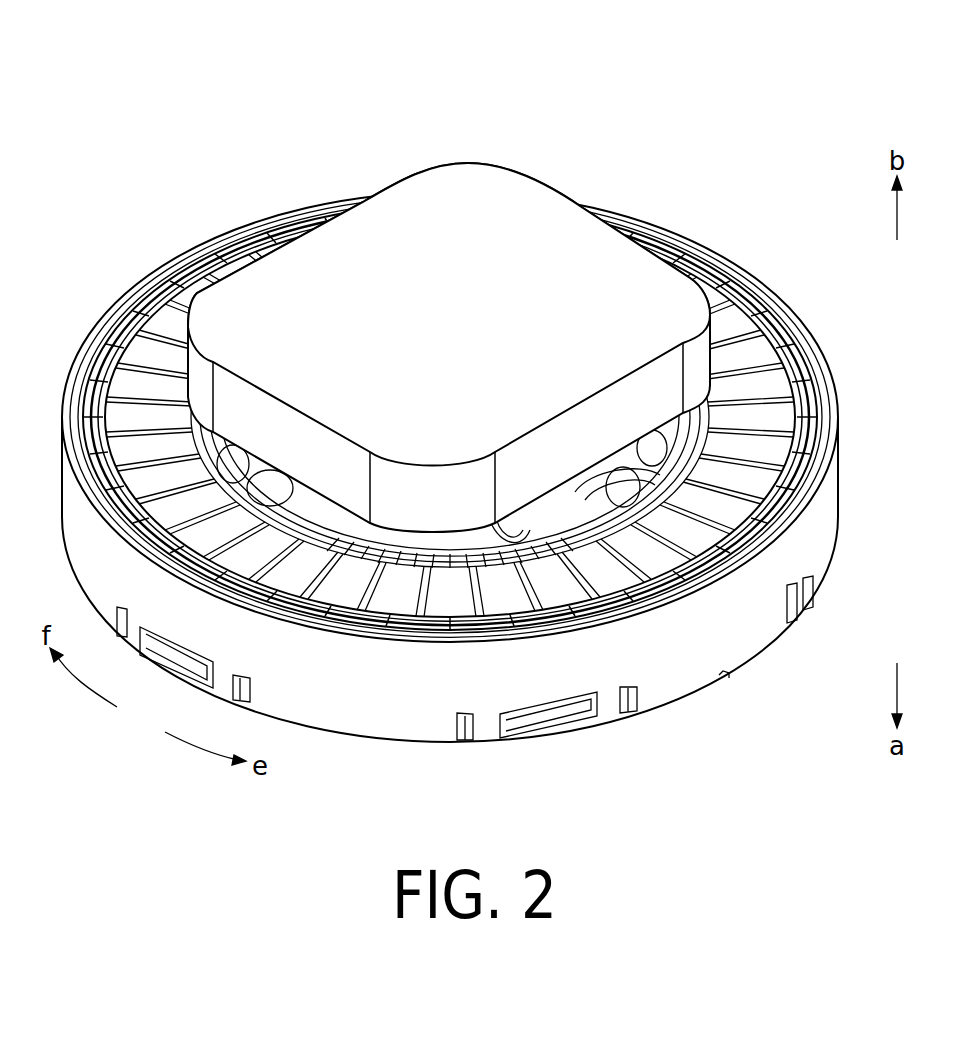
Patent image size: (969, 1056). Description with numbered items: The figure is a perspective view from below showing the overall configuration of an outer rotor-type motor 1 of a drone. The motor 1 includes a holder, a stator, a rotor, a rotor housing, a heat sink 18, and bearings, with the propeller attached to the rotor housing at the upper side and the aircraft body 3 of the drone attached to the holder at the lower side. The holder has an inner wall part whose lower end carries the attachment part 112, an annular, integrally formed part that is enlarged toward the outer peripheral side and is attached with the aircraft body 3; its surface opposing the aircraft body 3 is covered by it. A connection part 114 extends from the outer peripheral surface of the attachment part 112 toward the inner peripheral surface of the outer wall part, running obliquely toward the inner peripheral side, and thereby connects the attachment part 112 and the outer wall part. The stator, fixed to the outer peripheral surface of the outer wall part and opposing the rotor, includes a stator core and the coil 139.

The motor 1 is at (227, 47).
The aircraft body 3 is at (465, 163).
The heat sink 18 is at (315, 517).
The coil 139 is at (453, 602).
The connection part 114 is at (522, 524).
The attachment part 112 is at (582, 487).